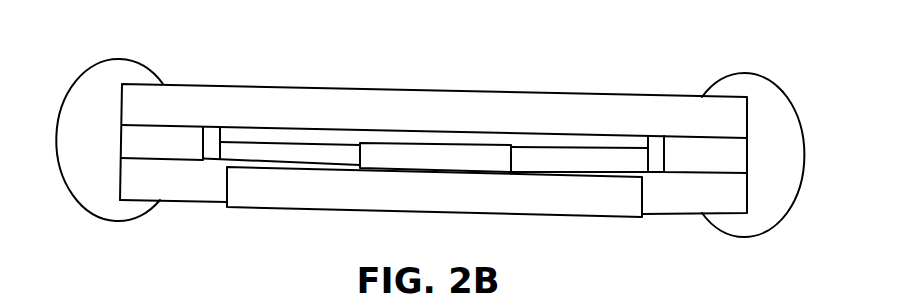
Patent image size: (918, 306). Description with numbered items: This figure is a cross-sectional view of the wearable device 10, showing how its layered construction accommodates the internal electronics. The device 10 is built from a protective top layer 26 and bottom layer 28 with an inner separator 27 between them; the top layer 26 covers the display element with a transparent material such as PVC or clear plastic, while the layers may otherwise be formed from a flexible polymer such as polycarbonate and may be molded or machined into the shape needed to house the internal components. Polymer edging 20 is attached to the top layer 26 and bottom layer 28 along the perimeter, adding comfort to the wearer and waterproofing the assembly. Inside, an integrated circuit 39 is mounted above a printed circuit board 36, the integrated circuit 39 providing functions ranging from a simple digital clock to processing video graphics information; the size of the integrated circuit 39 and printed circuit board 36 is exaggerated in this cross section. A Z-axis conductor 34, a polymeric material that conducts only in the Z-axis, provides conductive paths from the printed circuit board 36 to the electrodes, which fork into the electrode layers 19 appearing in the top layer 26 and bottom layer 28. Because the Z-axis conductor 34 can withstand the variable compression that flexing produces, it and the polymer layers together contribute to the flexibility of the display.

The device 10 is at (600, 65).
The electrode layers 19 is at (268, 135).
The polymer edging 20 is at (77, 102).
The top layer 26 is at (213, 105).
The inner separator 27 is at (155, 147).
The bottom layer 28 is at (196, 188).
The Z-axis conductor 34 is at (293, 153).
The printed circuit board 36 is at (596, 194).
The integrated circuit 39 is at (413, 158).